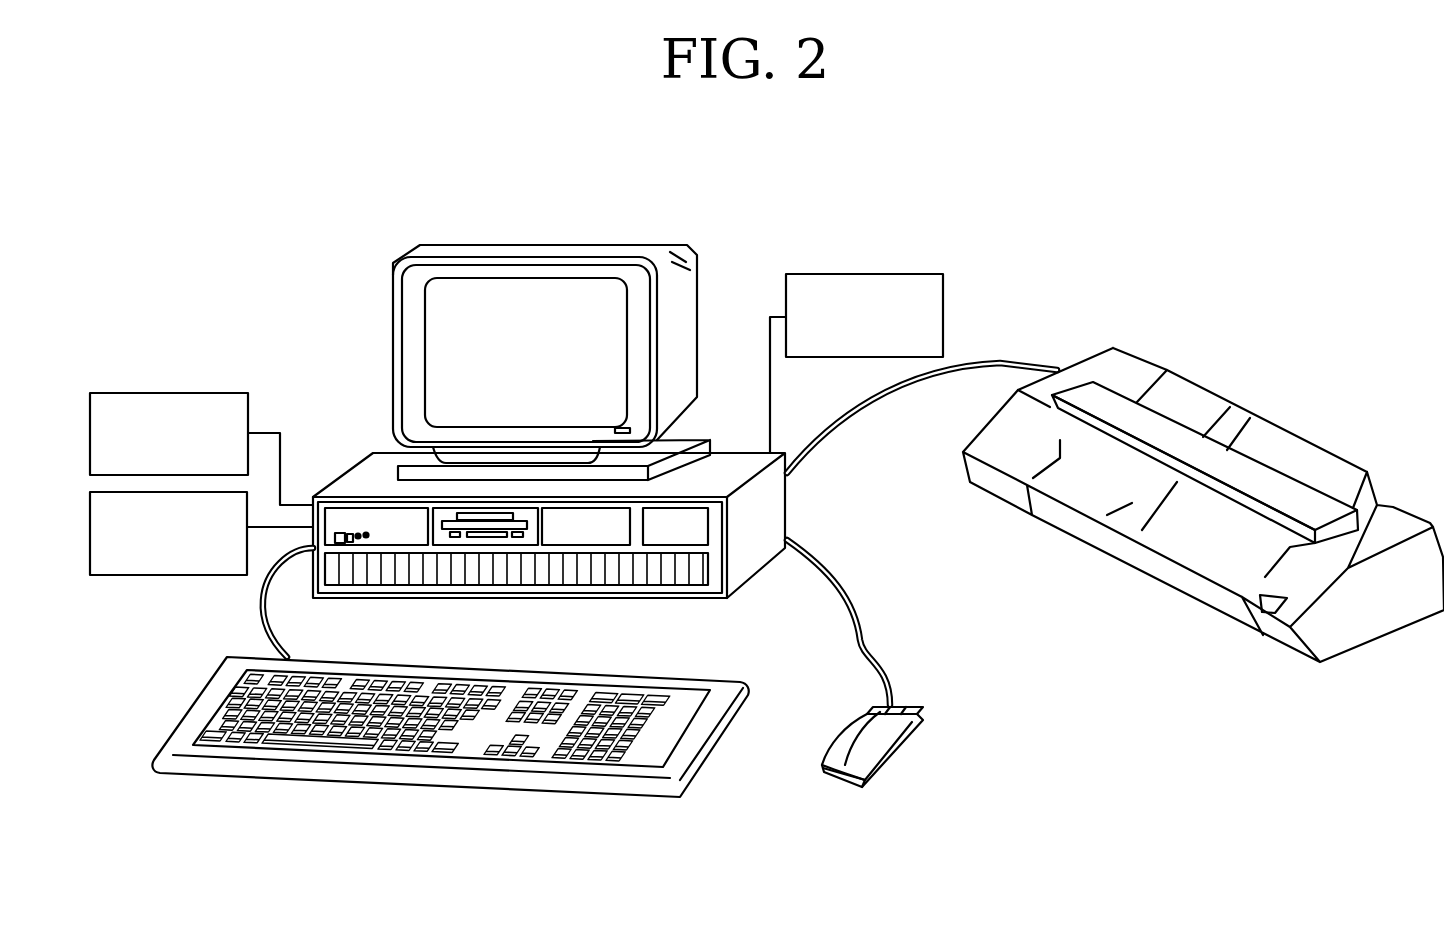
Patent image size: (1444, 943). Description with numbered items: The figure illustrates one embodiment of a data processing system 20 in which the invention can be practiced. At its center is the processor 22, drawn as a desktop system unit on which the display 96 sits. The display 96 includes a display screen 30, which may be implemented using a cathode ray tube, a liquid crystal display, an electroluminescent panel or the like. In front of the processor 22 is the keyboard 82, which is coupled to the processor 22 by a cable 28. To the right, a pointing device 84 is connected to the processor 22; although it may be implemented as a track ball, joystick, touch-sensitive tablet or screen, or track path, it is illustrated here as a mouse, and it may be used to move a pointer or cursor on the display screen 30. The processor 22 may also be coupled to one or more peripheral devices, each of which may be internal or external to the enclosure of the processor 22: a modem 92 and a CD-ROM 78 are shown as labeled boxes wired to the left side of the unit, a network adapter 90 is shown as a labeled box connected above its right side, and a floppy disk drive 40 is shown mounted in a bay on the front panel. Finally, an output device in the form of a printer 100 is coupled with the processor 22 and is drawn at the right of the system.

The data processing system 20 is at (1028, 270).
The processor 22 is at (722, 603).
The cable 28 is at (266, 613).
The display screen 30 is at (526, 352).
The floppy disk drive 40 is at (478, 531).
The CD-ROM 78 is at (187, 575).
The keyboard 82 is at (496, 793).
The pointing device 84 is at (905, 742).
The network adapter 90 is at (873, 273).
The modem 92 is at (142, 393).
The display 96 is at (390, 316).
The printer 100 is at (1178, 364).